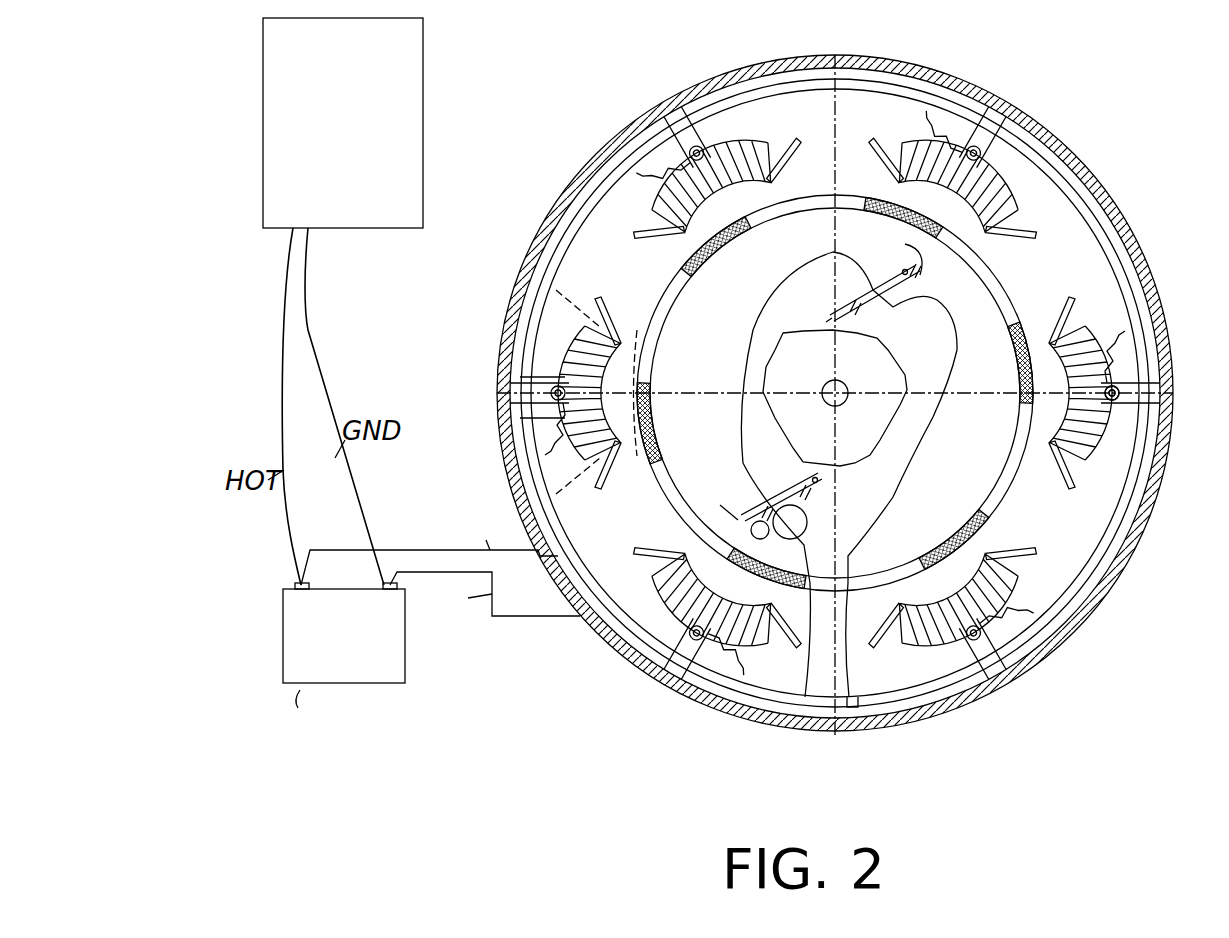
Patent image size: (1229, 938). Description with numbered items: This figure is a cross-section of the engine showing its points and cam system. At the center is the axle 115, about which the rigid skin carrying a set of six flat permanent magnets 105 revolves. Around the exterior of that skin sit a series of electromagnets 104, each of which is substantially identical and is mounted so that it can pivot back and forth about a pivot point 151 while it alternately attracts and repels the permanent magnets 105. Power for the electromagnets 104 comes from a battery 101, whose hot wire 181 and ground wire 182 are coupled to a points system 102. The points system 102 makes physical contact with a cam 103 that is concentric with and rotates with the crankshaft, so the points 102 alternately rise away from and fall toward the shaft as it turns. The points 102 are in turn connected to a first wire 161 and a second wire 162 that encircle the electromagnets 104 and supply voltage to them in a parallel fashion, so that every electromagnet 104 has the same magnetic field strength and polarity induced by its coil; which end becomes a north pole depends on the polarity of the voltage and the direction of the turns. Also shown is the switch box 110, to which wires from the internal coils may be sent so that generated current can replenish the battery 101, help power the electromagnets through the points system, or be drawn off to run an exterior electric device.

The battery 101 is at (410, 672).
The points system 102 is at (868, 310).
The cam 103 is at (765, 362).
The electromagnets 104 is at (1058, 468).
The permanent magnets 105 is at (1013, 316).
The switch box 110 is at (350, 192).
The axle 115 is at (829, 406).
The pivot point 151 is at (1120, 394).
The first wire 161 is at (1090, 190).
The second wire 162 is at (1093, 218).
The hot wire 181 is at (405, 550).
The ground wire 182 is at (535, 628).